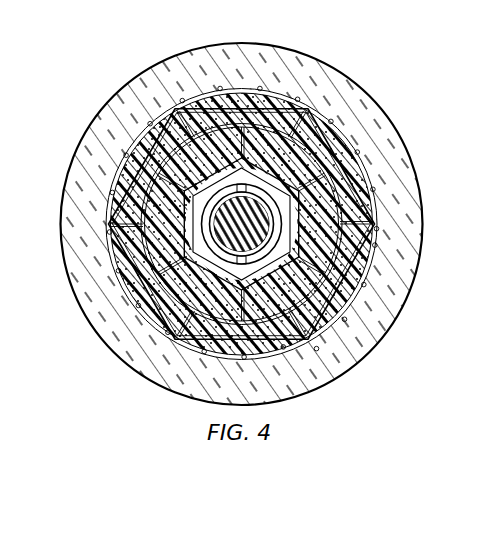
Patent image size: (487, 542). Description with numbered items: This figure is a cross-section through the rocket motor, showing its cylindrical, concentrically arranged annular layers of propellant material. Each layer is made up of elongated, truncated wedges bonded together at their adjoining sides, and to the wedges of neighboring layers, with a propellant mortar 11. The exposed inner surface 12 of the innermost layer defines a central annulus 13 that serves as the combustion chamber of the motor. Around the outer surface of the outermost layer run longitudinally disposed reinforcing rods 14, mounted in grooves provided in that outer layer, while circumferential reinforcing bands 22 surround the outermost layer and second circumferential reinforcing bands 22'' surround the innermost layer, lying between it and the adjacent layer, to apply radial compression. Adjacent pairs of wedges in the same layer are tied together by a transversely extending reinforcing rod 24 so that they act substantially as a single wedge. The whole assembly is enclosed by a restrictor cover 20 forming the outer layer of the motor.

The propellant mortar 11 is at (300, 101).
The restrictor cover 20 is at (372, 109).
The circumferential reinforcing bands 22 is at (272, 225).
The second circumferential reinforcing bands 22'' is at (293, 224).
The longitudinally disposed reinforcing rods 14 is at (377, 218).
The transversely extending reinforcing rod 24 is at (377, 210).
The annulus 13 is at (366, 286).
The inner surface 12 is at (355, 301).